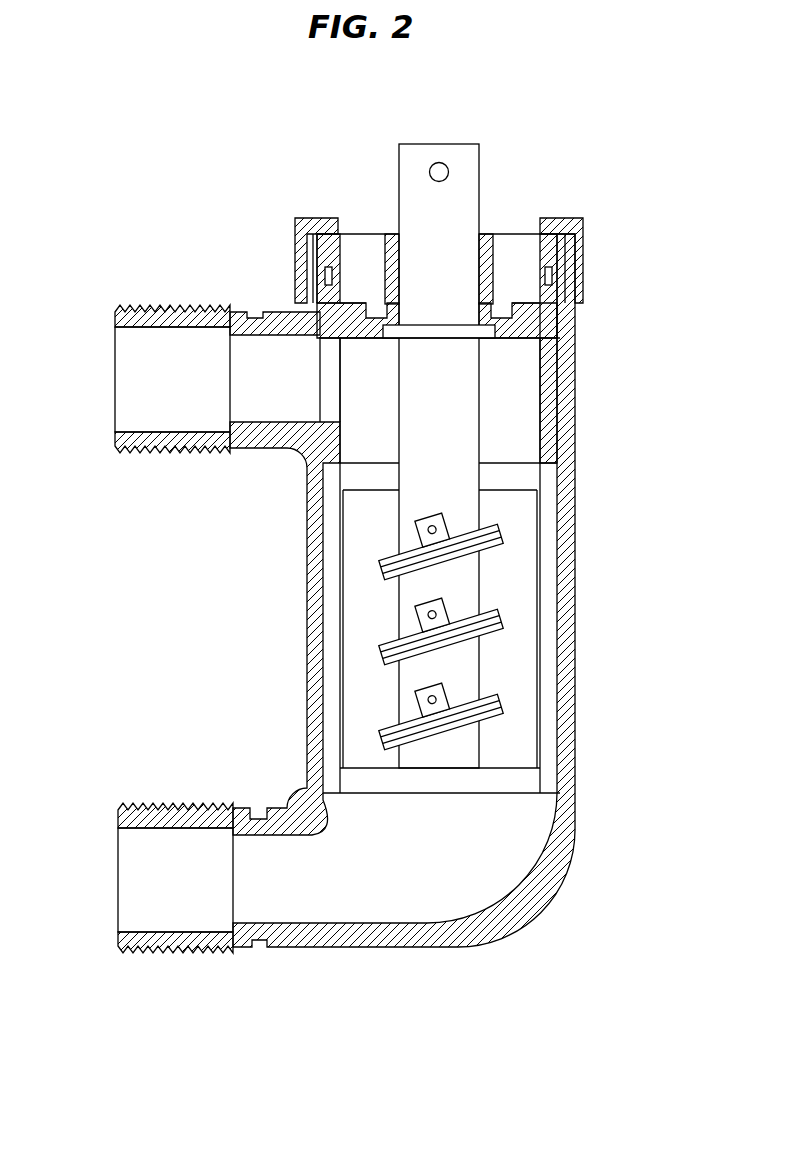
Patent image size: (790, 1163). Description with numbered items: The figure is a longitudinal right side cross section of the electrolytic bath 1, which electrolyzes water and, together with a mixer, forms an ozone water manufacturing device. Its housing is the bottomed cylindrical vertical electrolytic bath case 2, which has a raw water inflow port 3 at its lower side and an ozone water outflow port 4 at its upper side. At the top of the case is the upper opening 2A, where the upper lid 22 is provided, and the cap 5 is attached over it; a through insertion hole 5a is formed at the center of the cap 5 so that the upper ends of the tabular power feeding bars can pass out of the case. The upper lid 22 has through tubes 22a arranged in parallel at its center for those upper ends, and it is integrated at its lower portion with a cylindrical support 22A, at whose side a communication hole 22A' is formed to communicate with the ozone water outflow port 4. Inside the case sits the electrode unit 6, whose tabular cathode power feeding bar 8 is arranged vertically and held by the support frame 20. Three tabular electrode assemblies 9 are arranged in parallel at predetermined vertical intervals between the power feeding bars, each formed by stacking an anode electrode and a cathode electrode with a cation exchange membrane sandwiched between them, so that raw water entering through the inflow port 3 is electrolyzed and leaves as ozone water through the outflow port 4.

The electrolytic bath 1 is at (205, 212).
The vertical electrolytic bath case 2 is at (578, 624).
The upper opening 2A is at (523, 236).
The raw water inflow port 3 is at (145, 920).
The ozone water outflow port 4 is at (143, 415).
The cap 5 is at (585, 253).
The through insertion hole 5a is at (340, 226).
The electrode unit 6 is at (487, 418).
The tabular cathode power feeding bar 8 is at (465, 173).
The electrode assembly 9 is at (383, 543).
The support frame 20 is at (503, 470).
The upper lid 22 is at (357, 314).
The through tube 22a is at (385, 232).
The cylindrical support 22A is at (605, 348).
The communication hole 22A' is at (283, 368).